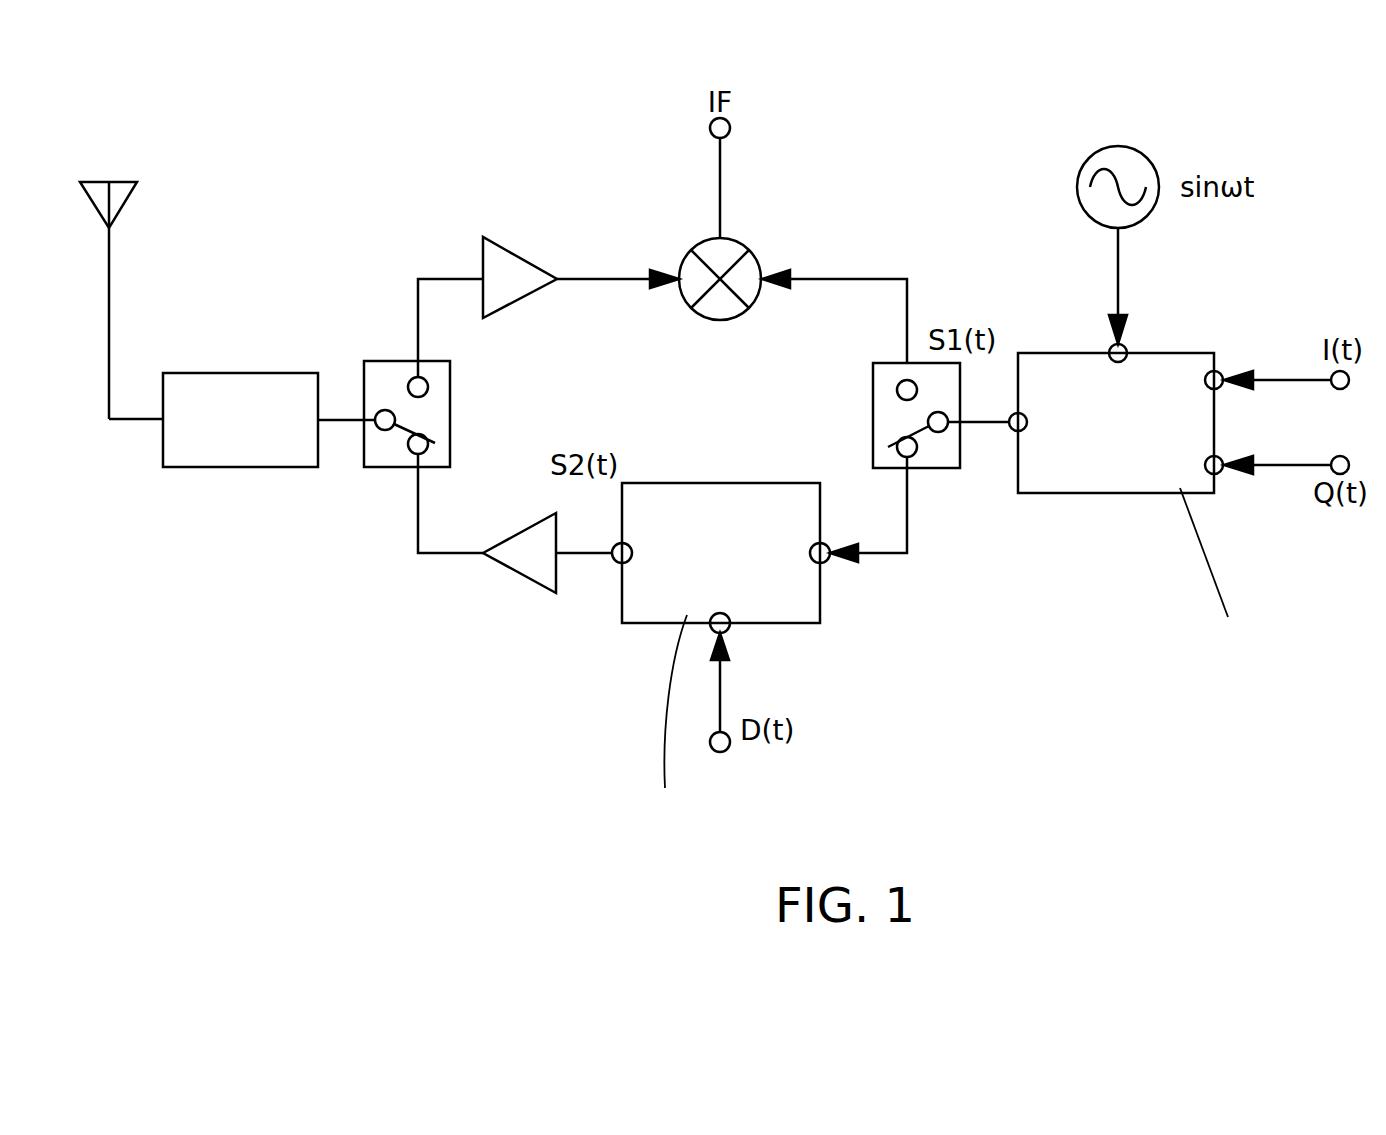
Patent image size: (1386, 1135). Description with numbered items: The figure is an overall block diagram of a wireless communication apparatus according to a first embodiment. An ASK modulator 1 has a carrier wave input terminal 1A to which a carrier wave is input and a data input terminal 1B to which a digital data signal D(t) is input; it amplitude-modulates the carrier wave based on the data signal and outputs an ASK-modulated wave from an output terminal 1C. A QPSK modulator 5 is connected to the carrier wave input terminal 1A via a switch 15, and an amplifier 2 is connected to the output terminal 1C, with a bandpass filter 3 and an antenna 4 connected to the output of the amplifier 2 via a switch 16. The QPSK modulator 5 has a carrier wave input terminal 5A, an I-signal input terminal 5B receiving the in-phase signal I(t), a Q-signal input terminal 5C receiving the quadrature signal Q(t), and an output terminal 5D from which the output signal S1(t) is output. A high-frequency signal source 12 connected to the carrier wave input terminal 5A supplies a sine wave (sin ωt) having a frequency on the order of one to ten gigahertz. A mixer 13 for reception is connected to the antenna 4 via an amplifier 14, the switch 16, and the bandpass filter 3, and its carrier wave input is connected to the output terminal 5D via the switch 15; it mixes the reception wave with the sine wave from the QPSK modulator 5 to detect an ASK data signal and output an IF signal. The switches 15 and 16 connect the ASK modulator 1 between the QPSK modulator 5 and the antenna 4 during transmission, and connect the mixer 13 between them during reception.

The ASK modulator 1 is at (640, 623).
The carrier wave input terminal 1A is at (830, 560).
The data input terminal 1B is at (730, 630).
The output terminal 1C is at (617, 563).
The amplifier 2 is at (522, 577).
The bandpass filter 3 is at (238, 467).
The antenna 4 is at (109, 262).
The QPSK modulator 5 is at (1123, 493).
The carrier wave input terminal 5A is at (1110, 350).
The I-signal input terminal 5B is at (1220, 375).
The Q-signal input terminal 5C is at (1222, 472).
The output terminal 5D is at (1013, 430).
The high-frequency signal source 12 is at (1118, 146).
The mixer 13 is at (730, 237).
The amplifier 14 is at (522, 255).
The switch 15 is at (937, 472).
The switch 16 is at (373, 361).